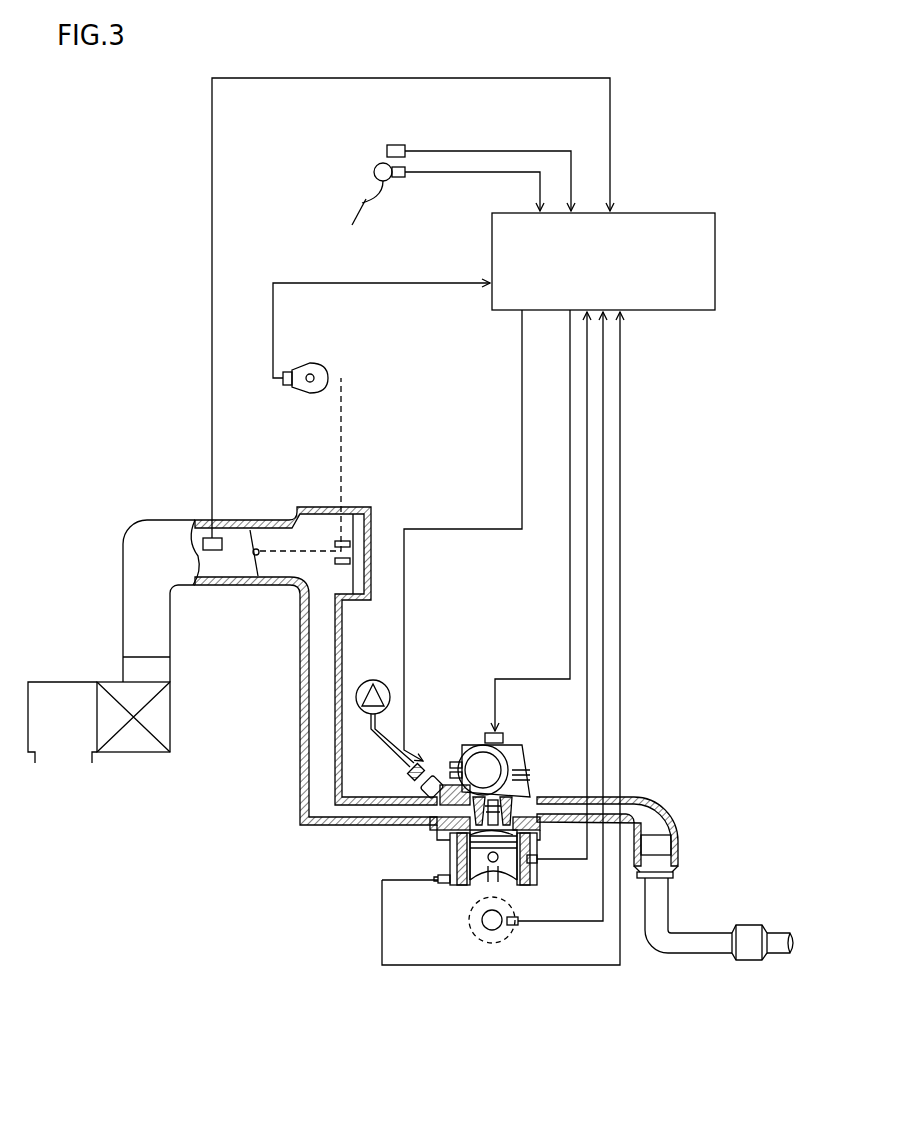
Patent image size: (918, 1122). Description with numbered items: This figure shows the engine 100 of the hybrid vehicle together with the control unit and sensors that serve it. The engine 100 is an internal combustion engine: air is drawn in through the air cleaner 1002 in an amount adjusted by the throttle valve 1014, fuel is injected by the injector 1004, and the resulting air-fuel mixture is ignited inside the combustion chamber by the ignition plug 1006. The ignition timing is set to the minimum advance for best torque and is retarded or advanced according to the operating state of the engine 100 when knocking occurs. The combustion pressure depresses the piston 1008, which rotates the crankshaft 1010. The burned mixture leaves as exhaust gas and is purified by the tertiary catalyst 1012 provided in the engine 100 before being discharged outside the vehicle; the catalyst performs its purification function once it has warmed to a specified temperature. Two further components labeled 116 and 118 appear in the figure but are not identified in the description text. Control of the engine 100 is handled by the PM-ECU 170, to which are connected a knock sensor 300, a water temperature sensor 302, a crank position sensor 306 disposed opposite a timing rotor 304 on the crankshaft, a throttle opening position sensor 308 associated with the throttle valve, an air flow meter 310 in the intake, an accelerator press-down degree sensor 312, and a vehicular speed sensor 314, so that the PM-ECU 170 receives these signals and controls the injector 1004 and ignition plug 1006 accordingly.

The engine 100 is at (416, 846).
The intake passage 116 is at (400, 812).
The exhaust passage 118 is at (531, 810).
The PM-ECU 170 is at (665, 212).
The knock sensor 300 is at (440, 883).
The water temperature sensor 302 is at (537, 862).
The timing rotor 304 is at (493, 927).
The crank position sensor 306 is at (518, 925).
The throttle opening position sensor 308 is at (320, 362).
The air flow meter 310 is at (223, 515).
The accelerator press-down degree sensor 312 is at (398, 178).
The vehicular speed sensor 314 is at (398, 145).
The air cleaner 1002 is at (133, 753).
The injector 1004 is at (428, 772).
The ignition plug 1006 is at (503, 737).
The piston 1008 is at (473, 872).
The crankshaft 1010 is at (478, 937).
The tertiary catalyst 1012 is at (660, 832).
The throttle valve 1014 is at (253, 567).